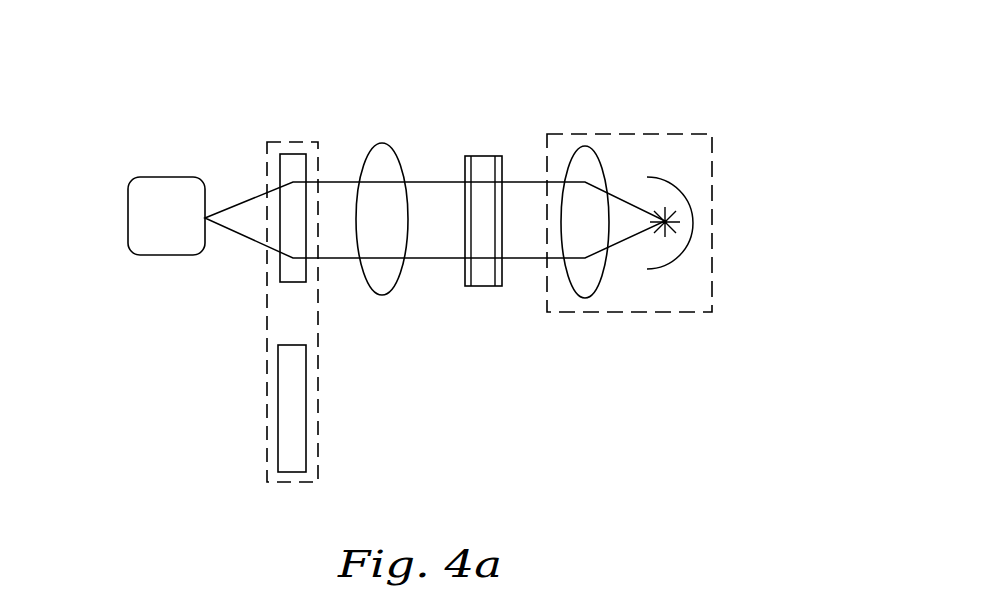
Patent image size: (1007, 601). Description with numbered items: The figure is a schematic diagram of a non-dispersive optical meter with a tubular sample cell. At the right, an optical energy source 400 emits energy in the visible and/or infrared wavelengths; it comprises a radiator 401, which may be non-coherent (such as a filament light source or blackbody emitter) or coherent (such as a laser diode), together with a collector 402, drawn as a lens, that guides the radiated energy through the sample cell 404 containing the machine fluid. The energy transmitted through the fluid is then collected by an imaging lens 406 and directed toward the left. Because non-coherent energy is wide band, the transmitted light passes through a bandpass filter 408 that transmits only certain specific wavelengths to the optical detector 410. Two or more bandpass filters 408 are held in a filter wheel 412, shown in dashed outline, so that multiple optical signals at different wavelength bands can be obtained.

The optical energy source 400 is at (713, 163).
The radiator 401 is at (691, 264).
The collector 402 is at (605, 277).
The sample cell 404 is at (508, 154).
The imaging lens 406 is at (400, 272).
The bandpass filter 408 is at (360, 440).
The optical detector 410 is at (128, 237).
The filter wheel 412 is at (318, 472).